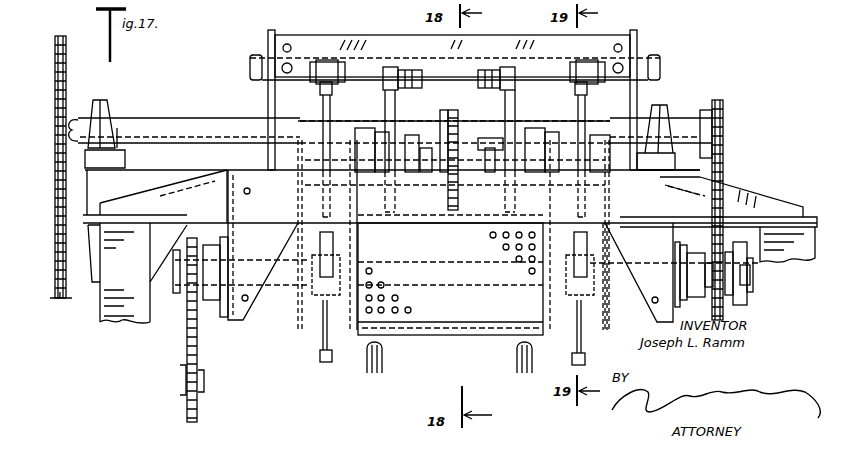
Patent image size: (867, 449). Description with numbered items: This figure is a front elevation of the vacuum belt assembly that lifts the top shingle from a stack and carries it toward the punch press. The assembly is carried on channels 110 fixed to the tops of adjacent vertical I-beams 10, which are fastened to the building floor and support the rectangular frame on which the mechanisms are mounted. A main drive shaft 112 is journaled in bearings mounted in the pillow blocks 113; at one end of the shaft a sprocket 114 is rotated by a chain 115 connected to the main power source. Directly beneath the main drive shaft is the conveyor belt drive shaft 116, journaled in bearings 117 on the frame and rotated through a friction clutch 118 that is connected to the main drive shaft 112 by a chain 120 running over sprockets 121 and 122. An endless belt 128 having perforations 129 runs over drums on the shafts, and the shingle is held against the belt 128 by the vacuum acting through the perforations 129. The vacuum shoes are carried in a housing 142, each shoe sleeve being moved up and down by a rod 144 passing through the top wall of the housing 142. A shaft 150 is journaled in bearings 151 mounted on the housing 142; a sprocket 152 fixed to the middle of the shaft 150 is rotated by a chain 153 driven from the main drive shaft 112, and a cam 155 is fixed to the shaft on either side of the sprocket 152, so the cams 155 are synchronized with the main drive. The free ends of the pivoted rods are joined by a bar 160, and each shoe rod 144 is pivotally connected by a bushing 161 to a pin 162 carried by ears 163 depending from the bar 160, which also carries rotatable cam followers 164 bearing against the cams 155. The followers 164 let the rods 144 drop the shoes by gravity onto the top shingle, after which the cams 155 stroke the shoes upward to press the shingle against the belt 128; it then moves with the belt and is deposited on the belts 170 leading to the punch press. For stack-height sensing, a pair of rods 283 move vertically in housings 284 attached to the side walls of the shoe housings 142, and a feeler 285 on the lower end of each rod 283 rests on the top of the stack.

The vertical I-beams 10 is at (124, 318).
The channels 110 is at (781, 215).
The main drive shaft 112 is at (190, 118).
The pillow blocks 113 is at (108, 107).
The sprocket 114 is at (66, 64).
The chain 115 is at (66, 292).
The conveyor belt drive shaft 116 is at (620, 290).
The bearings 117 is at (224, 306).
The friction clutch 118 is at (752, 282).
The chain 120 is at (722, 182).
The sprocket 121 is at (724, 120).
The sprocket 122 is at (742, 305).
The endless belt 128 is at (482, 322).
The perforations 129 is at (412, 310).
The housing 142 is at (298, 320).
The rod 144 is at (331, 116).
The shaft 150 is at (489, 148).
The bearings 151 is at (360, 134).
The sprocket 152 is at (458, 165).
The chain 153 is at (447, 215).
The cam 155 is at (397, 99).
The bar 160 is at (330, 36).
The bushing 161 is at (320, 92).
The pin 162 is at (340, 70).
The ears 163 is at (314, 62).
The cam followers 164 is at (390, 68).
The belts 170 is at (368, 362).
The rods 283 is at (320, 340).
The housings 284 is at (334, 243).
The feeler 285 is at (336, 352).